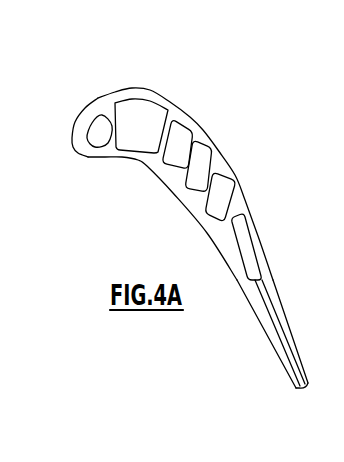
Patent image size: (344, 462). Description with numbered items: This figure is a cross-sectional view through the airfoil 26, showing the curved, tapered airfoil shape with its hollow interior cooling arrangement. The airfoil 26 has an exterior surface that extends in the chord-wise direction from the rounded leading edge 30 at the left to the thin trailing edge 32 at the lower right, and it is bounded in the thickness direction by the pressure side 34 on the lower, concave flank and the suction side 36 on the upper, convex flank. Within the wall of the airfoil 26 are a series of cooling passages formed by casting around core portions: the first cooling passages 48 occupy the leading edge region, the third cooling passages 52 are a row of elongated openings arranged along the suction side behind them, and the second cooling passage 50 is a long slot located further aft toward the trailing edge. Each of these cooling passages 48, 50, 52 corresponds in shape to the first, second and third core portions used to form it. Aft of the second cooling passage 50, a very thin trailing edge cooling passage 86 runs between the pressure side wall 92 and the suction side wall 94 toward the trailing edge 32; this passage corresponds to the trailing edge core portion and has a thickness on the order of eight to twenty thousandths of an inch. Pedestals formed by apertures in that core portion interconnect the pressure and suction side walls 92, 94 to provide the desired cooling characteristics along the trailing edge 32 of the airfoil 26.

The airfoil 26 is at (197, 235).
The leading edge 30 is at (73, 142).
The trailing edge 32 is at (298, 389).
The pressure side 34 is at (150, 170).
The suction side 36 is at (157, 90).
The first cooling passage 48 is at (102, 130).
The second cooling passage 50 is at (245, 237).
The third cooling passage 52 is at (186, 136).
The trailing edge cooling passage 86 is at (272, 297).
The pressure side wall 92 is at (263, 320).
The suction side wall 94 is at (292, 347).